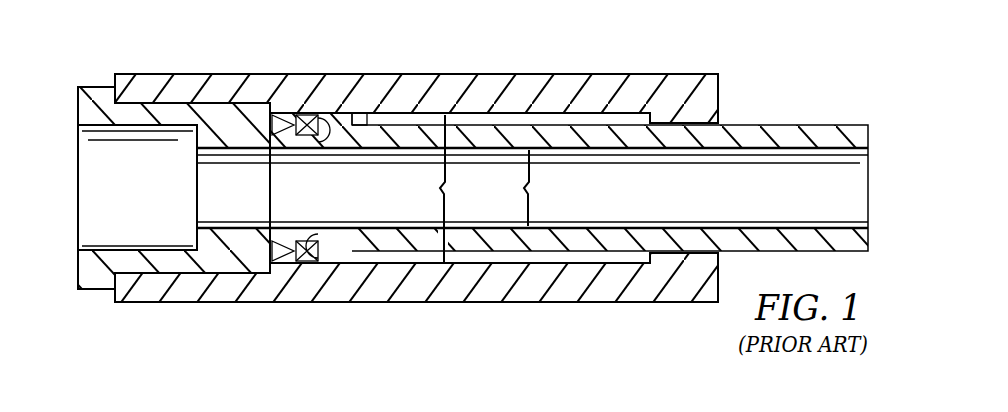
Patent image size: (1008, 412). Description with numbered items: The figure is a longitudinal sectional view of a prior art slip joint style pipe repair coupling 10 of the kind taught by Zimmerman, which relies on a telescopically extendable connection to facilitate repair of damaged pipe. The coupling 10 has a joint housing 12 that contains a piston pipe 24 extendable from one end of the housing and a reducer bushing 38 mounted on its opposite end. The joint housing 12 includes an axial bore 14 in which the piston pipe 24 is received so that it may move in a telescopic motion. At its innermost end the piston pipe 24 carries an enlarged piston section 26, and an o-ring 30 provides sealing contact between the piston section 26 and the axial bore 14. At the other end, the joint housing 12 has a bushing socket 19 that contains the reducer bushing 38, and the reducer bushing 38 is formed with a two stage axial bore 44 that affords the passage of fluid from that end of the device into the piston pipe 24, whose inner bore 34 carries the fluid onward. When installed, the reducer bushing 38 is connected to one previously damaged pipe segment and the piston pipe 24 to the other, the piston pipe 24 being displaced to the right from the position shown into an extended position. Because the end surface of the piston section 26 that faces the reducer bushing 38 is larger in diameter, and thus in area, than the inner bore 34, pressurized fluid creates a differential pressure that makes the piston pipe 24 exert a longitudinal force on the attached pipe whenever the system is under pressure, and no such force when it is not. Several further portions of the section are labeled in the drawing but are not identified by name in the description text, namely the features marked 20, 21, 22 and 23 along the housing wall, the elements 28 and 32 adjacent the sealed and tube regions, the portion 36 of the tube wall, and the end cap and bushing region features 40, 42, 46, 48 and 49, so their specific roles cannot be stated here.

The slip joint style pipe repair coupling 10 is at (702, 70).
The joint housing 12 is at (599, 312).
The axial bore 14 is at (460, 188).
The bushing socket 19 is at (216, 103).
The notch 20 is at (363, 104).
The retaining feature 21 is at (578, 117).
The lower lip 22 is at (668, 268).
The upper lip 23 is at (648, 120).
The piston pipe 24 is at (818, 119).
The piston section 26 is at (334, 262).
The insert 28 is at (331, 142).
The o-ring 30 is at (305, 113).
The tube lower wall 32 is at (703, 233).
The inner bore 34 is at (546, 188).
The tube upper wall 36 is at (516, 124).
The reducer bushing 38 is at (95, 82).
The end cap lower edge 40 is at (93, 290).
The end wall 42 is at (163, 258).
The two stage axial bore 44 is at (100, 203).
The end face 46 is at (78, 163).
The bore plug 48 is at (220, 203).
The sealing wedge 49 is at (275, 265).